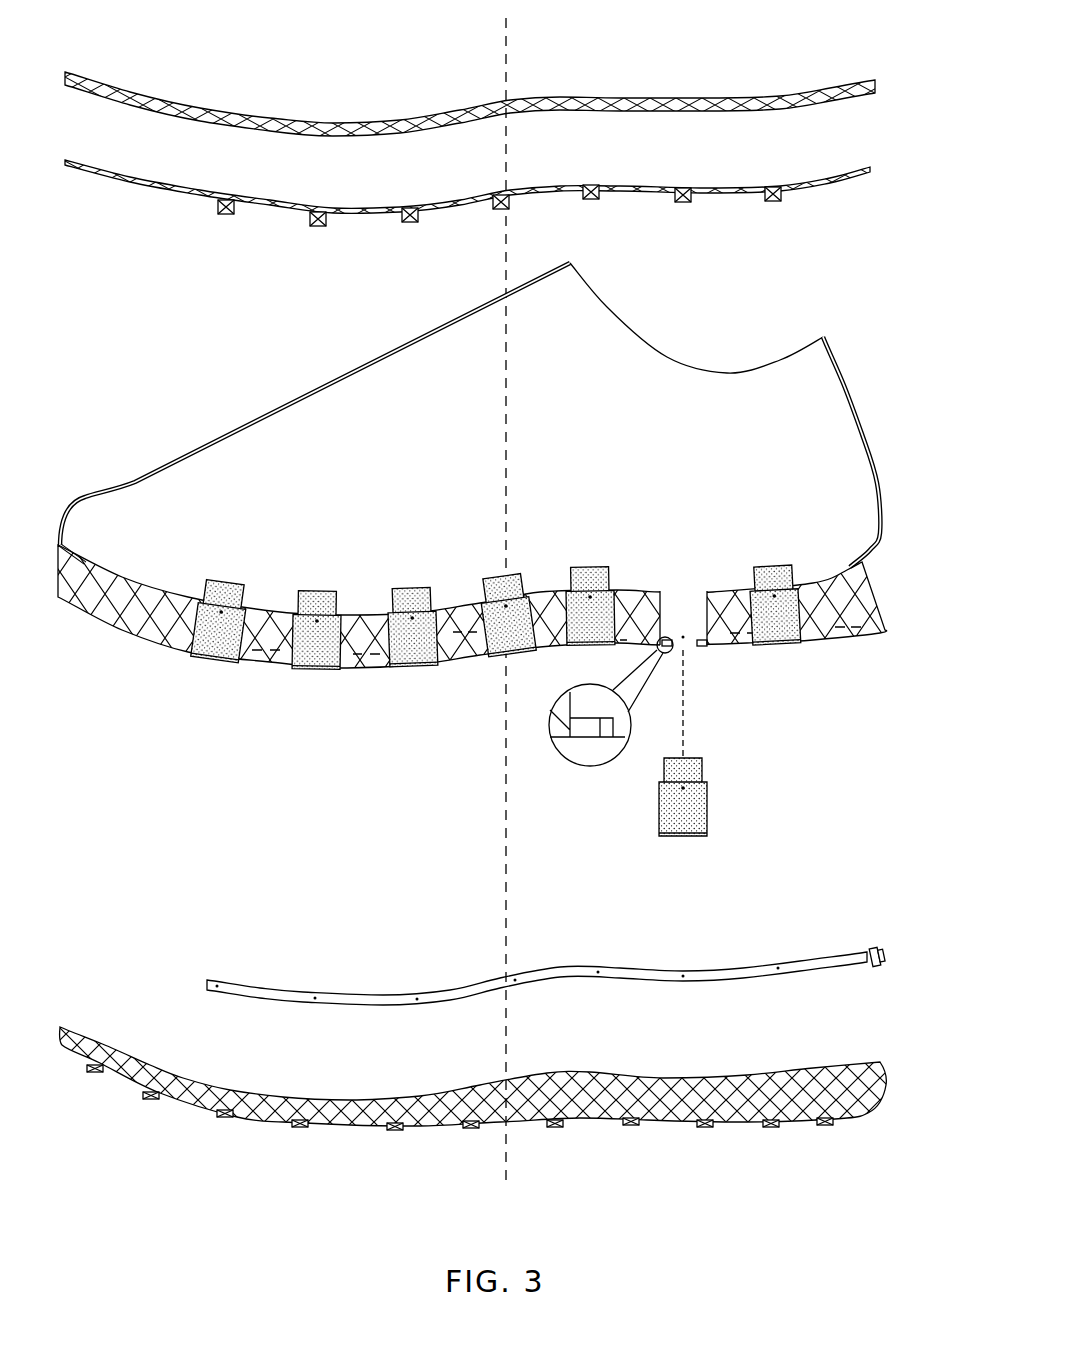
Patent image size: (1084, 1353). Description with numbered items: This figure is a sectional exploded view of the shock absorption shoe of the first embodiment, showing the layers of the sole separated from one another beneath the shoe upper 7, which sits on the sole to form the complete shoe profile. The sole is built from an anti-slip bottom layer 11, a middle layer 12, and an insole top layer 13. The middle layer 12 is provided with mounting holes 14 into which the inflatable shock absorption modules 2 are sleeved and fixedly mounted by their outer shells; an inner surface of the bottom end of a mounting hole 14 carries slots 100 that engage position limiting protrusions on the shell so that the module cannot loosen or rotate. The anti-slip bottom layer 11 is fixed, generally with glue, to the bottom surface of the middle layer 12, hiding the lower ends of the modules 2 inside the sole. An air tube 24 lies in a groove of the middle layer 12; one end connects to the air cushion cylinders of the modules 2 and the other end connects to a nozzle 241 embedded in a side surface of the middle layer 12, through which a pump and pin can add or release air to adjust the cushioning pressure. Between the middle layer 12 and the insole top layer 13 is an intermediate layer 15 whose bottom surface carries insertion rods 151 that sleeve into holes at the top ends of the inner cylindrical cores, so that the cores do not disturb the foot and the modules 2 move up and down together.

The inflatable shock absorption module 2 is at (229, 578).
The shoe upper 7 is at (291, 407).
The anti-slip bottom layer 11 is at (665, 1127).
The middle layer 12 is at (367, 669).
The insole top layer 13 is at (663, 101).
The mounting hole 14 is at (684, 603).
The intermediate layer 15 is at (827, 174).
The air tube 24 is at (743, 971).
The slot 100 is at (588, 730).
The insertion rod 151 is at (775, 203).
The nozzle 241 is at (877, 945).